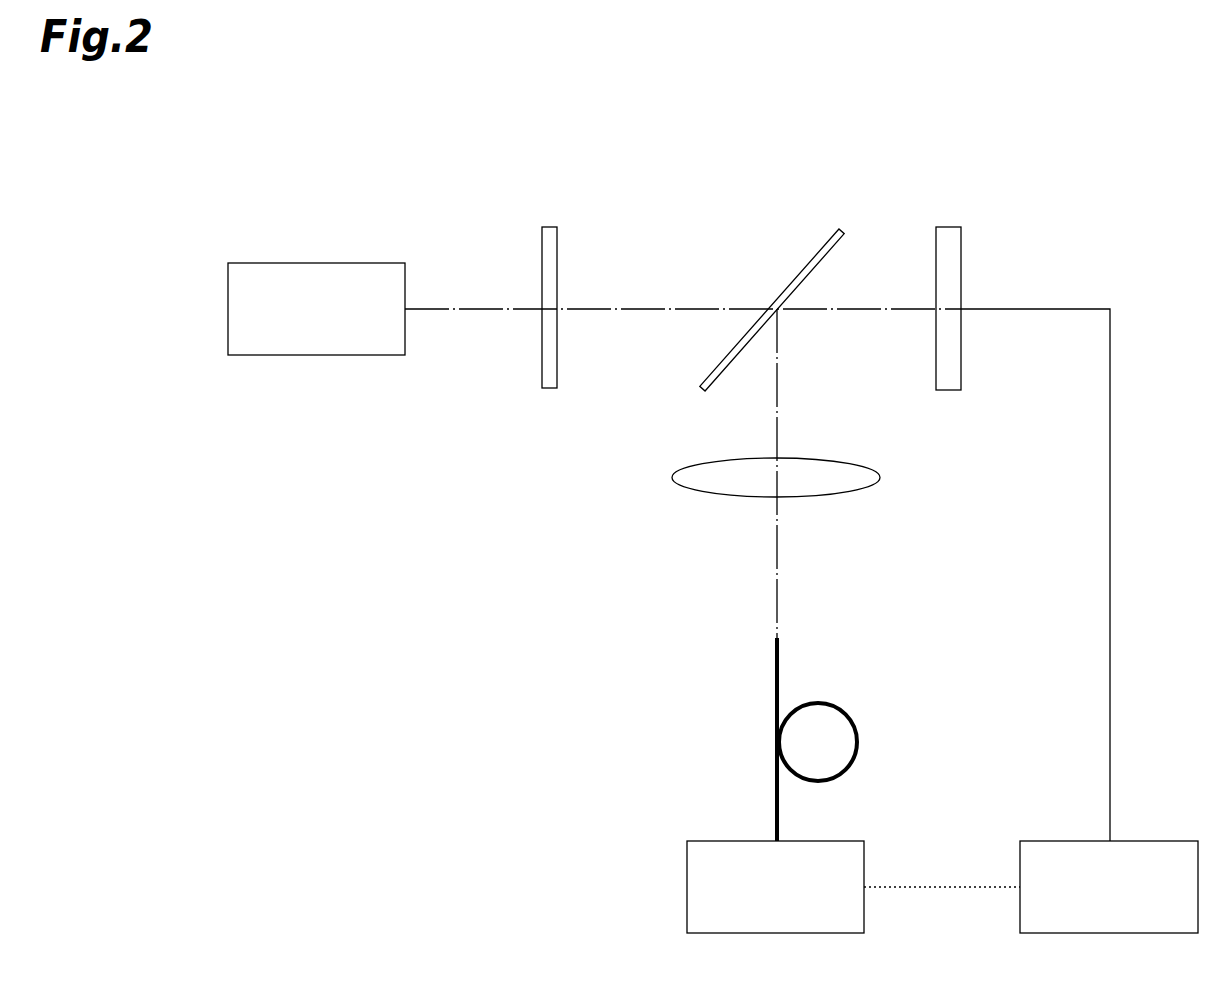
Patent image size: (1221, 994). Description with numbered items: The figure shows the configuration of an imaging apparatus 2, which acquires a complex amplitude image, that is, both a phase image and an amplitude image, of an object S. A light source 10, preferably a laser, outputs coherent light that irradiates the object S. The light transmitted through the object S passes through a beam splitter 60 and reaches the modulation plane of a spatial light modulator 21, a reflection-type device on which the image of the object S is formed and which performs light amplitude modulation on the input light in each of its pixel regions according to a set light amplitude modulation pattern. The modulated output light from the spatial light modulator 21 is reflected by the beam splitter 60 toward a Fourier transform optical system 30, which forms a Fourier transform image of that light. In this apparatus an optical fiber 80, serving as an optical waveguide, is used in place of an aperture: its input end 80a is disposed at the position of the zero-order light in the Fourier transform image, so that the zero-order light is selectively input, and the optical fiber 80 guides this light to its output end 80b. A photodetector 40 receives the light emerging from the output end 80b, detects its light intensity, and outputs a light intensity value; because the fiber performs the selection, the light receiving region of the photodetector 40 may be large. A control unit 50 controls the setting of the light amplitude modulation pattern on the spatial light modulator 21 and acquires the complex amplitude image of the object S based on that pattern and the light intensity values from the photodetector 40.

The imaging apparatus 2 is at (702, 147).
The light source 10 is at (322, 262).
The object S is at (552, 226).
The beam splitter 60 is at (840, 230).
The spatial light modulator 21 is at (952, 226).
The Fourier transform optical system 30 is at (843, 492).
The photodetector 40 is at (706, 840).
The control unit 50 is at (1178, 840).
The optical fiber 80 is at (855, 716).
The input end 80a is at (778, 640).
The output end 80b is at (785, 840).